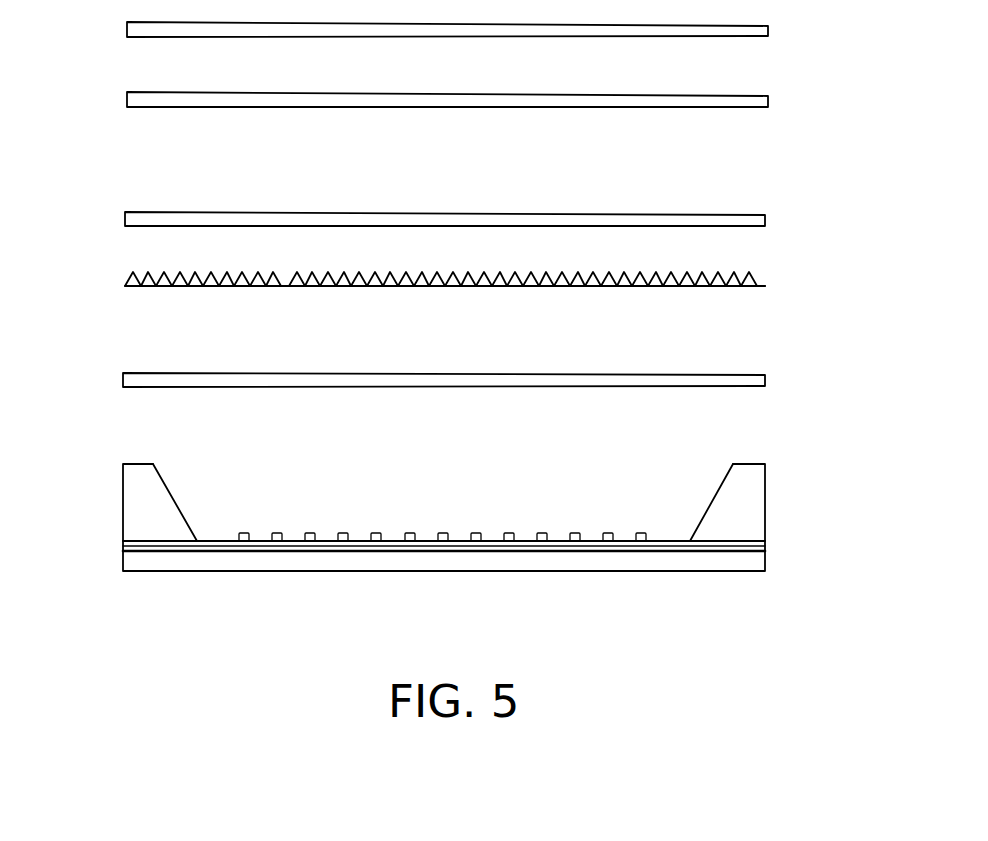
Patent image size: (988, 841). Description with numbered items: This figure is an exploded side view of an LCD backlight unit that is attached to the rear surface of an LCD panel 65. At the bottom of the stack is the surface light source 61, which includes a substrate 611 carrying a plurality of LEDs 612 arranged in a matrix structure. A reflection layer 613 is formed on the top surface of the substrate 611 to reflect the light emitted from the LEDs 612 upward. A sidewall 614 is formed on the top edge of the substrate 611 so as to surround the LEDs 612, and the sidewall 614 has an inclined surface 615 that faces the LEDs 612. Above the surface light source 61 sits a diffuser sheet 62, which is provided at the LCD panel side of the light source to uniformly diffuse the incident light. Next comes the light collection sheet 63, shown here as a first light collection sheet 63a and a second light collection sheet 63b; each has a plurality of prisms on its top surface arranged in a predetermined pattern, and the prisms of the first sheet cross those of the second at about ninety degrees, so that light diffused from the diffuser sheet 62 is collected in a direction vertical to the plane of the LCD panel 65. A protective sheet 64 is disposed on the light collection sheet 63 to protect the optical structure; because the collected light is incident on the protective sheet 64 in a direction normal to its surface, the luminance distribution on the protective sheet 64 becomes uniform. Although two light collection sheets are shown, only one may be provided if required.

The surface light source 61 is at (448, 510).
The substrate 611 is at (765, 562).
The LEDs 612 is at (411, 533).
The reflection layer 613 is at (765, 544).
The sidewall 614 is at (127, 505).
The inclined reflecting surface 615 is at (170, 493).
The diffuser sheet 62 is at (765, 380).
The light collection sheet 63 is at (524, 260).
The first light collection sheet 63a is at (765, 284).
The second light collection sheet 63b is at (765, 221).
The protective sheet 64 is at (768, 101).
The LCD panel 65 is at (768, 30).